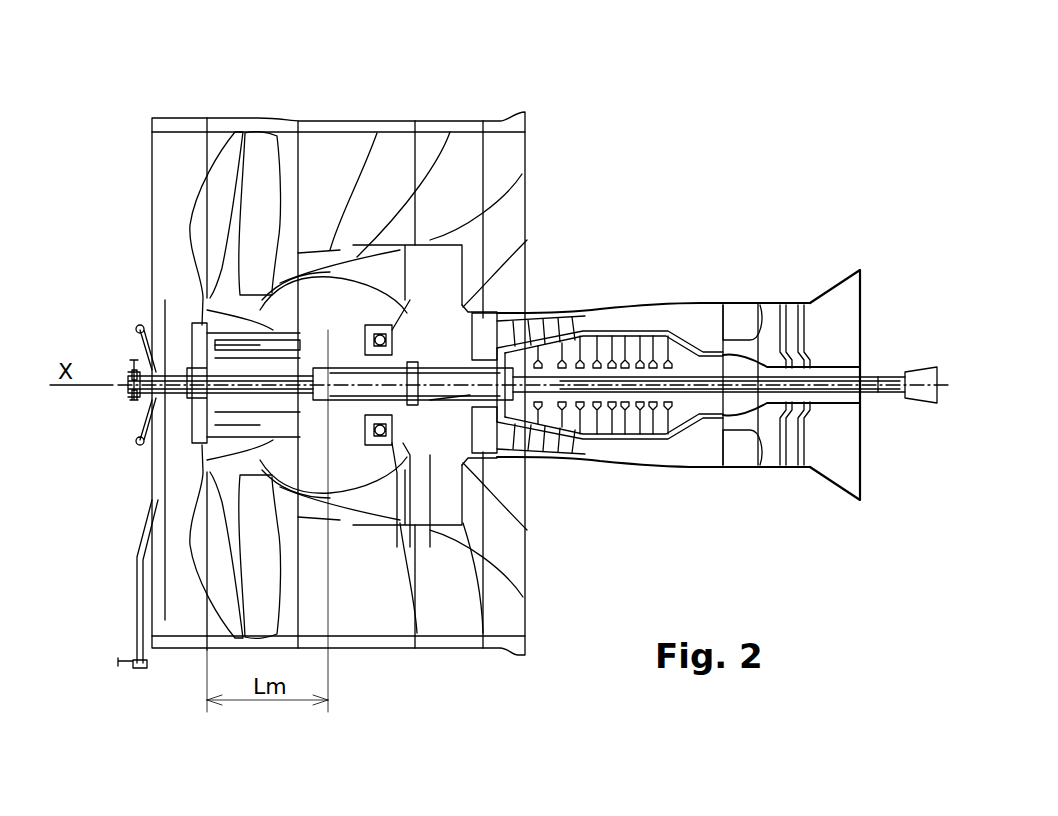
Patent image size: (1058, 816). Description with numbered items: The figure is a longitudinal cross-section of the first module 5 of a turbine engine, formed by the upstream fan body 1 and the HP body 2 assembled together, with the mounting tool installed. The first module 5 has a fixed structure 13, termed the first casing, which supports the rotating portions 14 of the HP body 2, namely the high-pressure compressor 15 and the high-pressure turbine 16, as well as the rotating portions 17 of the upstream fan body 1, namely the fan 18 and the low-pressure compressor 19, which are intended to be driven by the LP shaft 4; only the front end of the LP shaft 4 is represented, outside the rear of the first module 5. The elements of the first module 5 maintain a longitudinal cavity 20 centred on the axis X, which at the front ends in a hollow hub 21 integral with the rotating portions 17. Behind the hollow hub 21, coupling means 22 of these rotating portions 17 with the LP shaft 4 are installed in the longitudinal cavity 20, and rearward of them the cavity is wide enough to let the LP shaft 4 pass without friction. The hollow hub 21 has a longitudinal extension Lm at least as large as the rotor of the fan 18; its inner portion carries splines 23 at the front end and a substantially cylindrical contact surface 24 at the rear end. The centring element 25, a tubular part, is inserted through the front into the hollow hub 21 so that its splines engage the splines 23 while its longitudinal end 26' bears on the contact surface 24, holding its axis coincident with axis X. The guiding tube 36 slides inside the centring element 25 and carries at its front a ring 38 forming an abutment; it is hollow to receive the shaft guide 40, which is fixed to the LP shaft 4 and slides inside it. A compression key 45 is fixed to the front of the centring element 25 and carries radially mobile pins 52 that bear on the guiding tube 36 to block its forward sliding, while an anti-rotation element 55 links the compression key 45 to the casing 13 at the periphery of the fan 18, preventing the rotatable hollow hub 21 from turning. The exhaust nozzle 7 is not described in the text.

The upstream fan body 1 is at (222, 122).
The HP body 2 is at (665, 305).
The LP shaft 4 is at (913, 365).
The first module 5 is at (727, 155).
The exhaust nozzle 7 is at (845, 265).
The fixed structure 13 is at (430, 277).
The rotating portions of the HP body 14 is at (782, 242).
The high-pressure compressor 15 is at (690, 305).
The high-pressure turbine 16 is at (778, 320).
The rotating portions of the upstream fan body 17 is at (397, 80).
The fan 18 is at (310, 155).
The low-pressure compressor 19 is at (350, 175).
The longitudinal cavity 20 is at (687, 400).
The hollow hub 21 is at (250, 322).
The coupling means 22 is at (522, 174).
The splines 23 is at (185, 323).
The contact surface 24 is at (450, 132).
The centring element 25 is at (253, 393).
The longitudinal end 26' is at (258, 347).
The guiding tube 36 is at (455, 405).
The ring 38 is at (127, 387).
The shaft guide 40 is at (632, 390).
The compression key 45 is at (143, 408).
The pins 52 is at (133, 372).
The anti-rotation element 55 is at (120, 598).